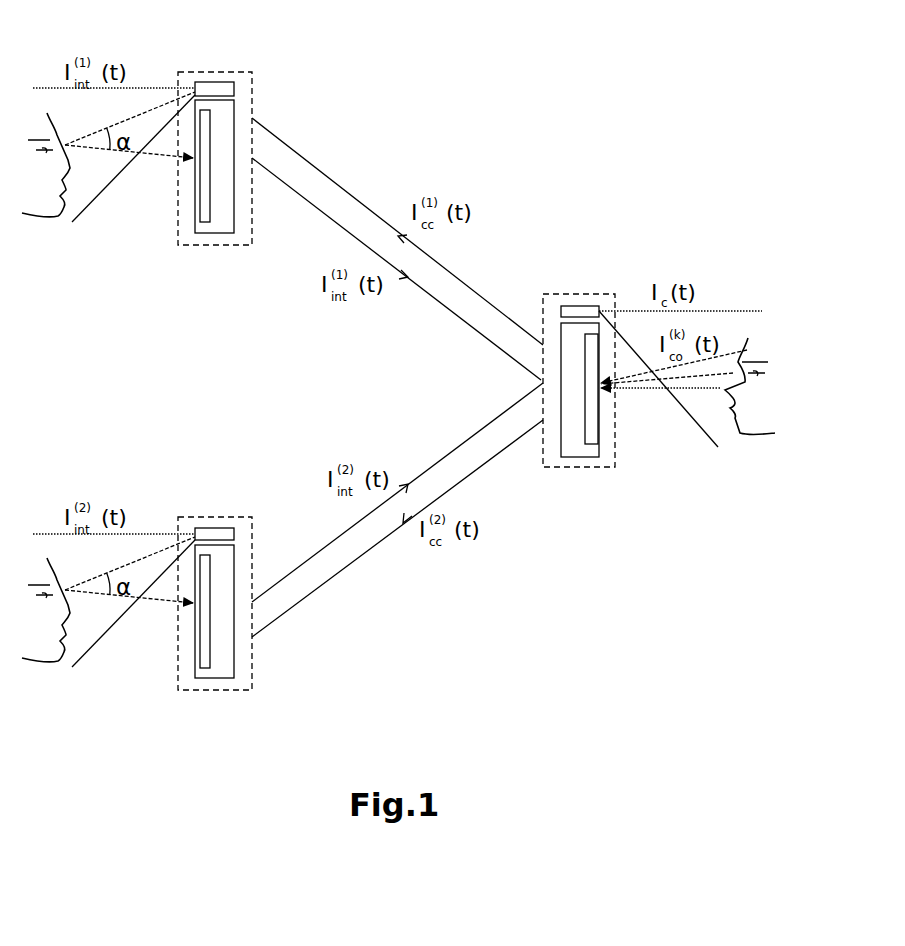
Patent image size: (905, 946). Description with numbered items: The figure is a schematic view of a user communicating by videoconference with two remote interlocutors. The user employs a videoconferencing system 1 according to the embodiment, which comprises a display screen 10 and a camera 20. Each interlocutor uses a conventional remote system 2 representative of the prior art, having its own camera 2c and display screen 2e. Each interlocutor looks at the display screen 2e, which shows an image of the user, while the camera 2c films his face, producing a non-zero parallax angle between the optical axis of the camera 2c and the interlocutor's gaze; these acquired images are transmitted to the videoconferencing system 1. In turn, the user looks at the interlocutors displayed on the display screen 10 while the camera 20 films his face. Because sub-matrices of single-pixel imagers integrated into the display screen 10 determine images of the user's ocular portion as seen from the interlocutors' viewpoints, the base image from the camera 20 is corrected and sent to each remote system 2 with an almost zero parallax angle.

The videoconferencing system 1 is at (577, 472).
The display screen 10 is at (604, 430).
The camera 20 is at (582, 301).
The remote system 2 is at (258, 91).
The camera 2c is at (209, 76).
The display screen 2e is at (192, 210).